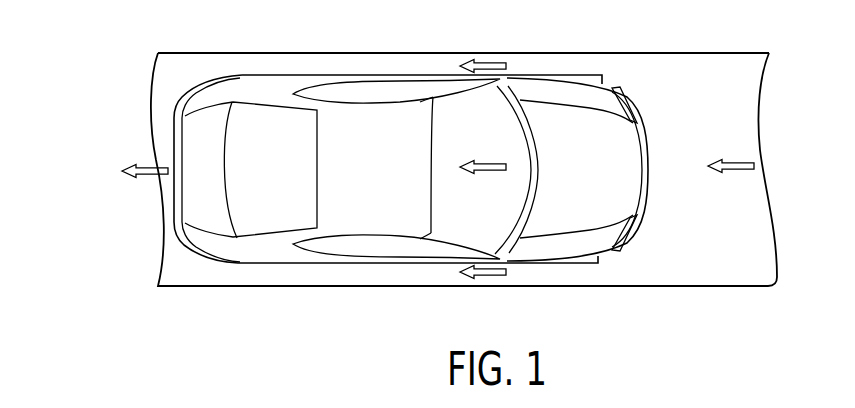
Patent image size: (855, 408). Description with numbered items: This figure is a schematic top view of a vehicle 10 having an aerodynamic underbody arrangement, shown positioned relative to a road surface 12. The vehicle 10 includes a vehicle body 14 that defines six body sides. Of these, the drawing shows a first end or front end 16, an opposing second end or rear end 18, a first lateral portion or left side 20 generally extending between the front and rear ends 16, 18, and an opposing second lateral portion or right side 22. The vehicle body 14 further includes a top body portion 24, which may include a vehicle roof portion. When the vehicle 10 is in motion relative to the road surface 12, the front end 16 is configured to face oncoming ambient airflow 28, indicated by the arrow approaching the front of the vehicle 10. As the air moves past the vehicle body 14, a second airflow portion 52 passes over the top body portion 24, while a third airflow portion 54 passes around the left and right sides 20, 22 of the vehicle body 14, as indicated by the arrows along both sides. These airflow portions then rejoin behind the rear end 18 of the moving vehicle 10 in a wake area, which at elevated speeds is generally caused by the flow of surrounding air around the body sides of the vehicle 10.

The vehicle 10 is at (666, 292).
The road surface 12 is at (718, 52).
The vehicle body 14 is at (622, 204).
The front end 16 is at (634, 118).
The rear end 18 is at (173, 153).
The left side 20 is at (433, 82).
The right side 22 is at (418, 266).
The top body portion 24 is at (380, 122).
The oncoming ambient airflow 28 is at (750, 163).
The second airflow portion 52 is at (491, 165).
The third airflow portion 54 is at (492, 62).